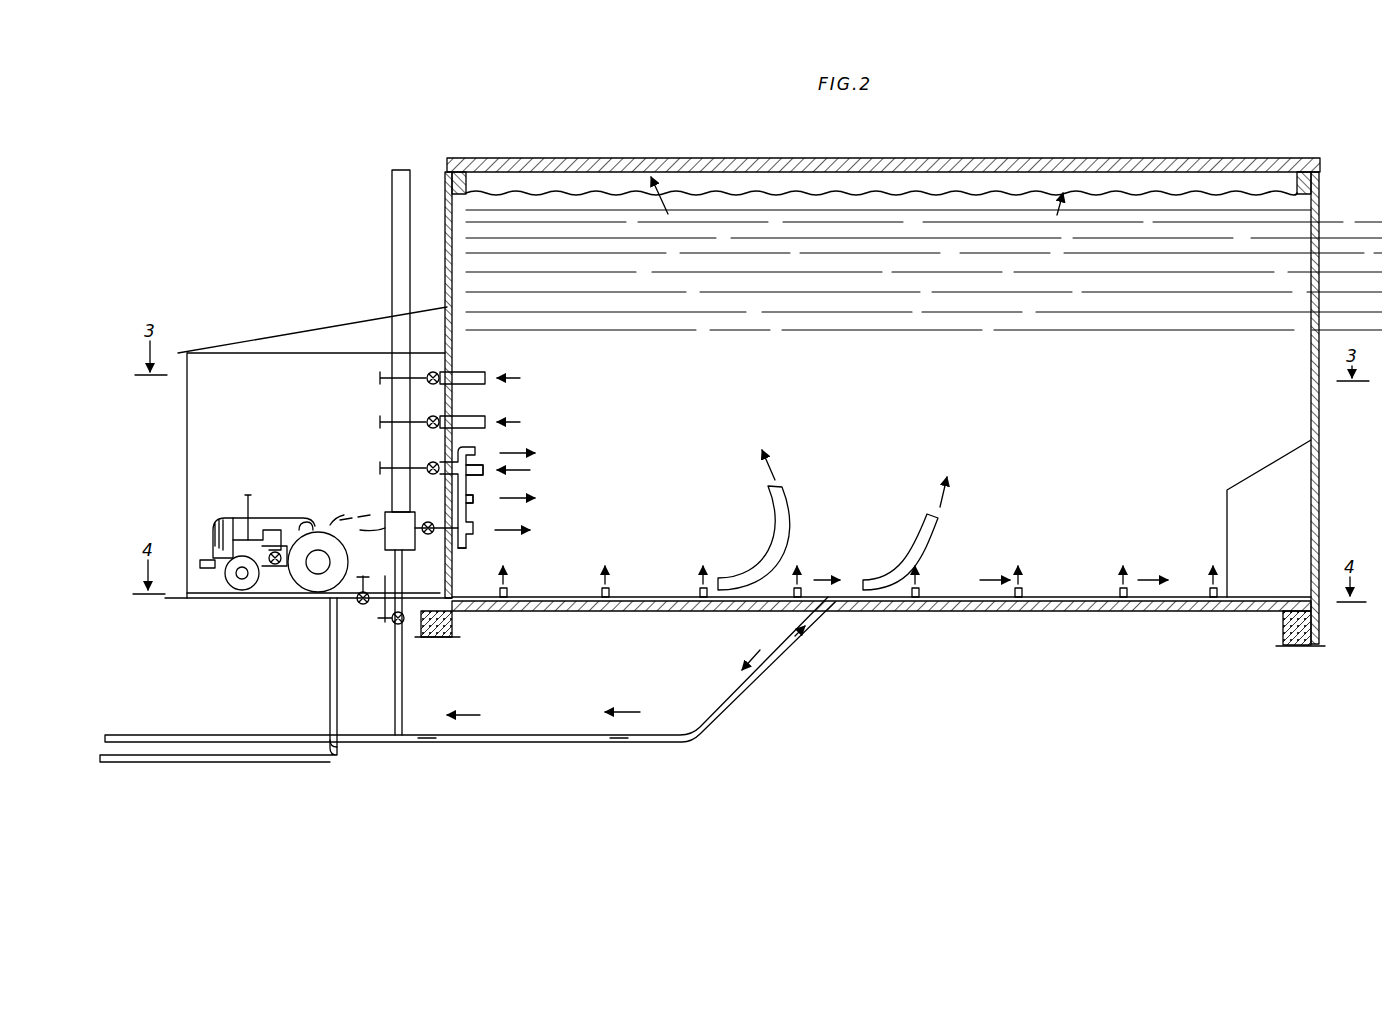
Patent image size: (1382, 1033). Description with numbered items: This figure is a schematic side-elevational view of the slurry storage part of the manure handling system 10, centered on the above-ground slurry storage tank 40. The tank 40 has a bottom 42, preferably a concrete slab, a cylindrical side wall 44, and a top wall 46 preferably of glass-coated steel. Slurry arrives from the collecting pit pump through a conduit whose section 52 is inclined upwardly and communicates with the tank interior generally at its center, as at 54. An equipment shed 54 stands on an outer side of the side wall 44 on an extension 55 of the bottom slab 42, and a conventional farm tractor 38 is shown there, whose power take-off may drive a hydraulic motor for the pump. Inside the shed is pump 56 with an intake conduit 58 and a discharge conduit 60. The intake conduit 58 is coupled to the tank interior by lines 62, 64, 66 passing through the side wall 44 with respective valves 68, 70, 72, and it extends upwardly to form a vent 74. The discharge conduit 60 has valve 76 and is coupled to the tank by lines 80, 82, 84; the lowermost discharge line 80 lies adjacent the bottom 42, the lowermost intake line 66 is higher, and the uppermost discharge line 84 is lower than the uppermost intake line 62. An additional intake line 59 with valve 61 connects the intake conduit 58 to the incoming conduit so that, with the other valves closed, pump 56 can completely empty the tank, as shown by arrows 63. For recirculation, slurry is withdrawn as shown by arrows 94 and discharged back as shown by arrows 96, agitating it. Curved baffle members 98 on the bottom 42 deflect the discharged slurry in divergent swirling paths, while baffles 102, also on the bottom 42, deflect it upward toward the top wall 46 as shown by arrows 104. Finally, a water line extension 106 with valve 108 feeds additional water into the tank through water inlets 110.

The tank system 10 is at (211, 200).
The farm tractor 38 is at (274, 549).
The slurry storage tank 40 is at (852, 252).
The bottom 42 is at (958, 612).
The side wall 44 is at (452, 276).
The top wall 46 is at (1213, 160).
The inclined section 52 is at (778, 670).
The equipment shed 54 is at (291, 332).
The extension 55 is at (242, 592).
The pump 56 is at (386, 513).
The intake conduit 58 is at (390, 448).
The additional intake line 59 is at (402, 684).
The discharge conduit 60 is at (362, 532).
The valve 61 is at (405, 625).
The intake line 62 is at (472, 372).
The arrows 63 is at (383, 665).
The intake line 64 is at (470, 416).
The intake line 66 is at (478, 475).
The valve 68 is at (431, 385).
The valve 70 is at (431, 429).
The valve 72 is at (431, 475).
The vent 74 is at (392, 219).
The valve 76 is at (427, 535).
The discharge line 80 is at (465, 548).
The discharge line 82 is at (472, 503).
The discharge line 84 is at (468, 447).
The arrows 94 is at (512, 376).
The arrows 96 is at (834, 585).
The curved baffle members 98 is at (1275, 541).
The baffles 102 is at (792, 512).
The arrows 104 is at (709, 314).
The water line extension 106 is at (330, 660).
The valve 108 is at (362, 606).
The water inlets 110 is at (603, 588).